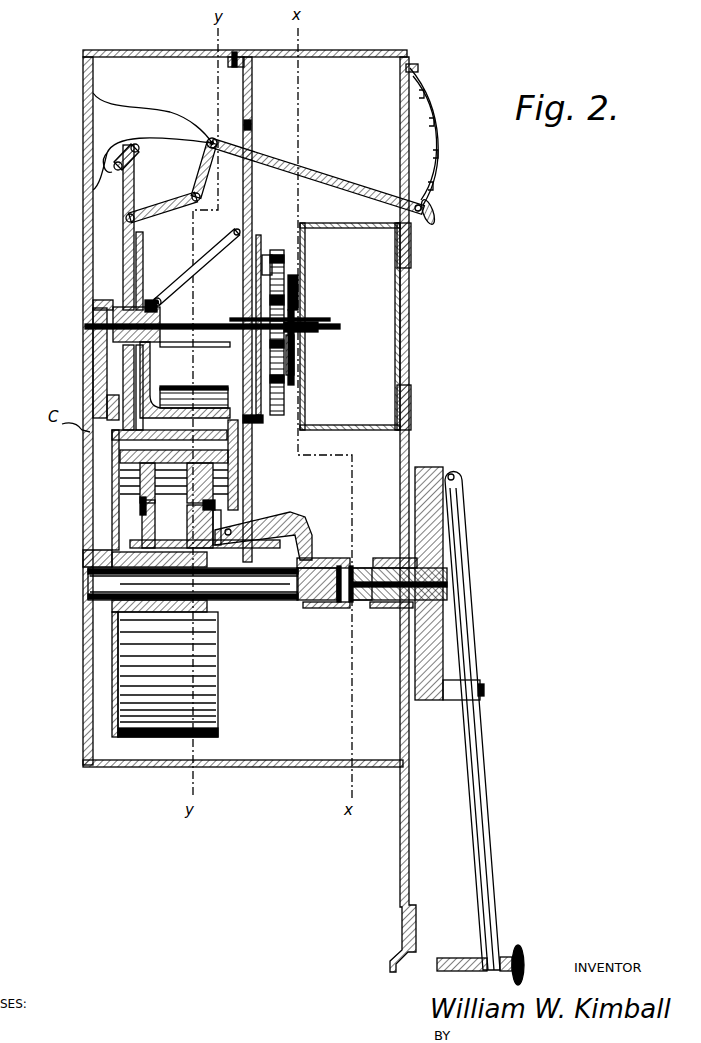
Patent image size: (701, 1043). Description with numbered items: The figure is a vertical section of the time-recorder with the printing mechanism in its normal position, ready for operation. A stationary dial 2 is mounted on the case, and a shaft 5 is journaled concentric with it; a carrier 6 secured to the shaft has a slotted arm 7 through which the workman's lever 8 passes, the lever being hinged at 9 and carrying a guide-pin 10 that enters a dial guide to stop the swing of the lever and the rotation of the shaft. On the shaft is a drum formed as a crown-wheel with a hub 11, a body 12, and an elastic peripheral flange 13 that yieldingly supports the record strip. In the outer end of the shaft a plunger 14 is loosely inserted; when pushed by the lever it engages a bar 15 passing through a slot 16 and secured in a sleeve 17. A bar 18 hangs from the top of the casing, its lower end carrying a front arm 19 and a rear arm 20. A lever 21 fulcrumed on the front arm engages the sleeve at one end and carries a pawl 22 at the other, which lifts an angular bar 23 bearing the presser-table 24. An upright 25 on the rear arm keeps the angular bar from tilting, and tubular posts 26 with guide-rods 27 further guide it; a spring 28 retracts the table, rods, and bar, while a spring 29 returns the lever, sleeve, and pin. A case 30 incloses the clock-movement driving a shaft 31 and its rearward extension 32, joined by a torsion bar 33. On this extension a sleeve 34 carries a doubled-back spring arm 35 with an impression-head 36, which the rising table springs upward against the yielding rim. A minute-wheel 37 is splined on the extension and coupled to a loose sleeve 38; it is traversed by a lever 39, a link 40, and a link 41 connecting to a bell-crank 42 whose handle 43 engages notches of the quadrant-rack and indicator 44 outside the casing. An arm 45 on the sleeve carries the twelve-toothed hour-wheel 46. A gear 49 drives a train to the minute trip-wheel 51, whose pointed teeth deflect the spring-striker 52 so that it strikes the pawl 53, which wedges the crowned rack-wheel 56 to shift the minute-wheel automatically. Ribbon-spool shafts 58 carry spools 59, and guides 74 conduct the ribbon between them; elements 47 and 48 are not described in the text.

The stationary dial 2 is at (409, 815).
The shaft 5 is at (267, 595).
The carrier 6 is at (447, 572).
The slotted arm 7 is at (489, 692).
The workman's lever 8 is at (474, 721).
The hinge 9 is at (461, 470).
The guide-pin 10 is at (480, 961).
The hub 11 is at (165, 668).
The body 12 is at (168, 671).
The peripheral flange 13 is at (168, 741).
The plunger 14 is at (366, 601).
The bar 15 is at (343, 600).
The slot 16 is at (317, 601).
The sleeve 17 is at (300, 625).
The bar 18 is at (250, 307).
The front lateral arm 19 is at (332, 579).
The rear lateral arm 20 is at (130, 543).
The lever 21 is at (293, 513).
The pawl 22 is at (248, 502).
The angular bar 23 is at (160, 524).
The presser-table 24 is at (207, 483).
The upright 25 is at (222, 522).
The tubular posts 26 is at (186, 526).
The guide-rods 27 is at (133, 500).
The spring 28 is at (153, 483).
The spring 29 is at (321, 519).
The case 30 is at (350, 326).
The shaft 31 is at (224, 327).
The rearward extension 32 is at (195, 345).
The bar 33 is at (281, 364).
The sleeve 34 is at (162, 318).
The arm 35 is at (185, 380).
The impression-head 36 is at (115, 446).
The minute-wheel 37 is at (149, 331).
The sleeve 38 is at (104, 333).
The lever 39 is at (117, 287).
The link 40 is at (122, 142).
The link 41 is at (162, 207).
The bell-crank 42 is at (307, 176).
The handle 43 is at (433, 215).
The quadrant-rack and indicator 44 is at (425, 134).
The arm 45 is at (104, 363).
The hour-wheel 46 is at (107, 407).
The pivot 47 is at (166, 291).
The link 48 is at (197, 267).
The gear 49 is at (296, 380).
The minute trip-wheel 51 is at (280, 307).
The spring-striker 52 is at (300, 278).
The pawl 53 is at (262, 235).
The crowned rack-wheel 56 is at (256, 356).
The ribbon-spool shafts 58 is at (248, 424).
The spool 59 is at (194, 389).
The guides 74 is at (240, 447).